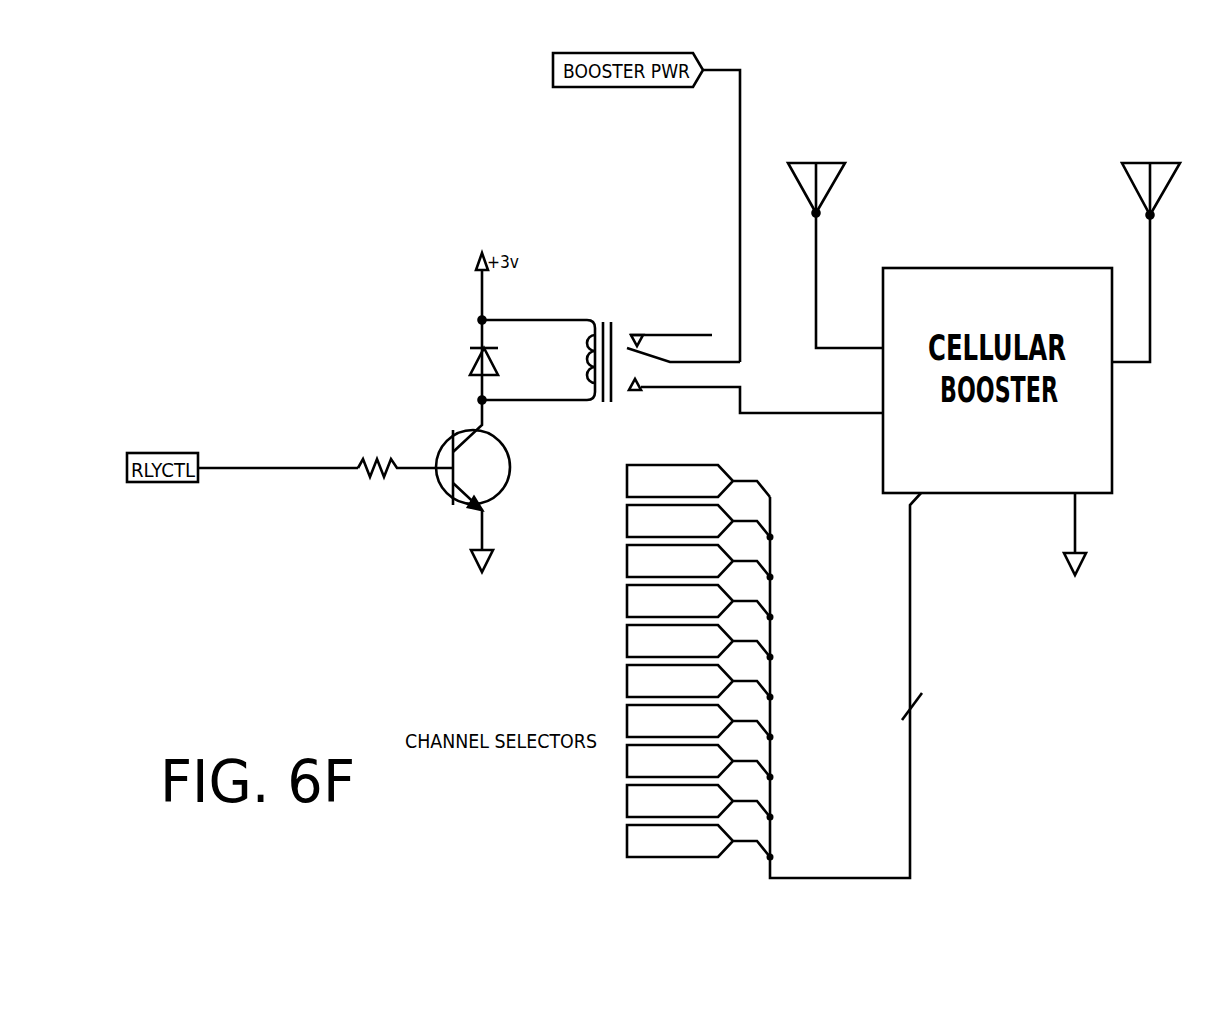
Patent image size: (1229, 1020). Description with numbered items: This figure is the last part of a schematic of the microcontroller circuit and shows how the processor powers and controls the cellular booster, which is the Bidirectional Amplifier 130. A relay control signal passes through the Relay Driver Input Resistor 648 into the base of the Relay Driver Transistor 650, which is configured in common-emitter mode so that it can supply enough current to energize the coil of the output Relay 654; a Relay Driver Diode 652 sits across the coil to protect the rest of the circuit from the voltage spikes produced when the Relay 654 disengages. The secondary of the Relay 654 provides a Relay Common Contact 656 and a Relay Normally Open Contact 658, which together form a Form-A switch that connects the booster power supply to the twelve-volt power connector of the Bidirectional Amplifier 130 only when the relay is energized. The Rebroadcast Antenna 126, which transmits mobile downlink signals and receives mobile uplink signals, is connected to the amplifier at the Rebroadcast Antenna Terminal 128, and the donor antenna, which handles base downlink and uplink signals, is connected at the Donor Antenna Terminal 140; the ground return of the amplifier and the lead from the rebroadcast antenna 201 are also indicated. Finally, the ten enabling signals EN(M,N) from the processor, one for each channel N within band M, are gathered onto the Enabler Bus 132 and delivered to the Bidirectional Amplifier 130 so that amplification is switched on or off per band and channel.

The rebroadcast antenna 126 is at (873, 190).
The donor antenna terminal 140 is at (1122, 190).
The rebroadcast antenna connection 201 is at (875, 336).
The rebroadcast antenna terminal 128 is at (873, 430).
The bidirectional amplifier 130 is at (1102, 508).
The enabler bus 132 is at (922, 785).
The relay driver input resistor 648 is at (360, 493).
The relay driver transistor 650 is at (500, 520).
The relay driver diode 652 is at (465, 375).
The relay 654 is at (615, 412).
The relay common contact 656 is at (751, 362).
The relay normally open contact 658 is at (740, 428).